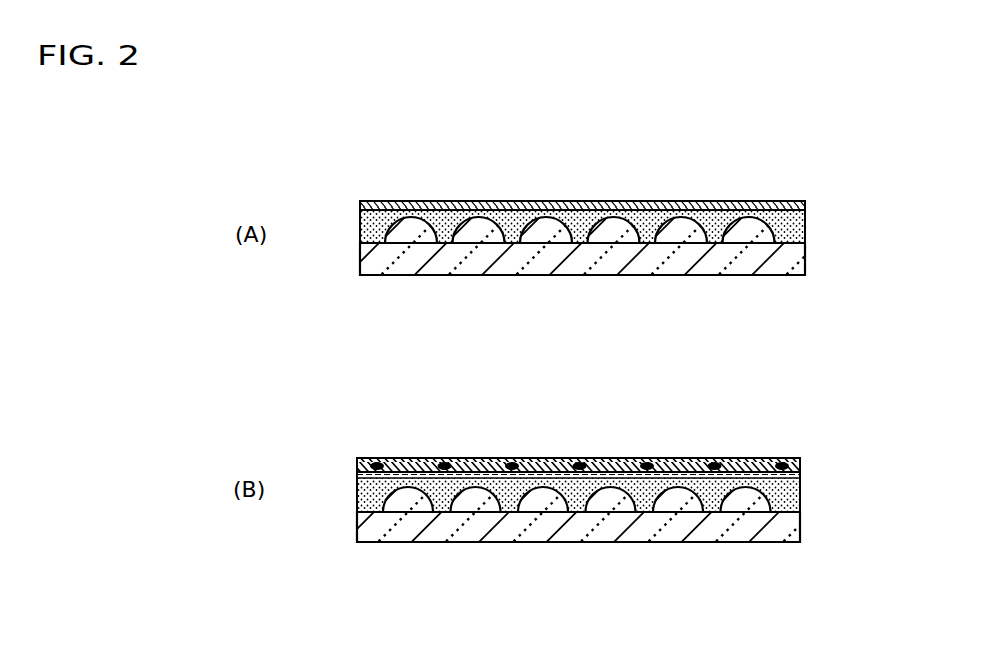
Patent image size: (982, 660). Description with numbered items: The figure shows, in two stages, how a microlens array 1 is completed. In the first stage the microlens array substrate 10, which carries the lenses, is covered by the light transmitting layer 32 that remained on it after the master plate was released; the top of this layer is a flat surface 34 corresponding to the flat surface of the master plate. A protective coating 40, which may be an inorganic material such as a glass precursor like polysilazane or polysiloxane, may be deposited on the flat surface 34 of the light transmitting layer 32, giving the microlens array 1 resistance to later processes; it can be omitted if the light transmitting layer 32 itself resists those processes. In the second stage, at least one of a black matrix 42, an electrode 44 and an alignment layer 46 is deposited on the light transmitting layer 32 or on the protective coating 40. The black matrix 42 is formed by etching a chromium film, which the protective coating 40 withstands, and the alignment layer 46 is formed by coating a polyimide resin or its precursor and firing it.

The microlens array 1 is at (630, 193).
The microlens array substrate 10 is at (797, 267).
The light transmitting layer 32 is at (797, 223).
The flat surface 34 is at (753, 201).
The protective coating 40 is at (798, 201).
The black matrix 42 is at (644, 458).
The electrode 44 is at (689, 458).
The alignment layer 46 is at (763, 458).